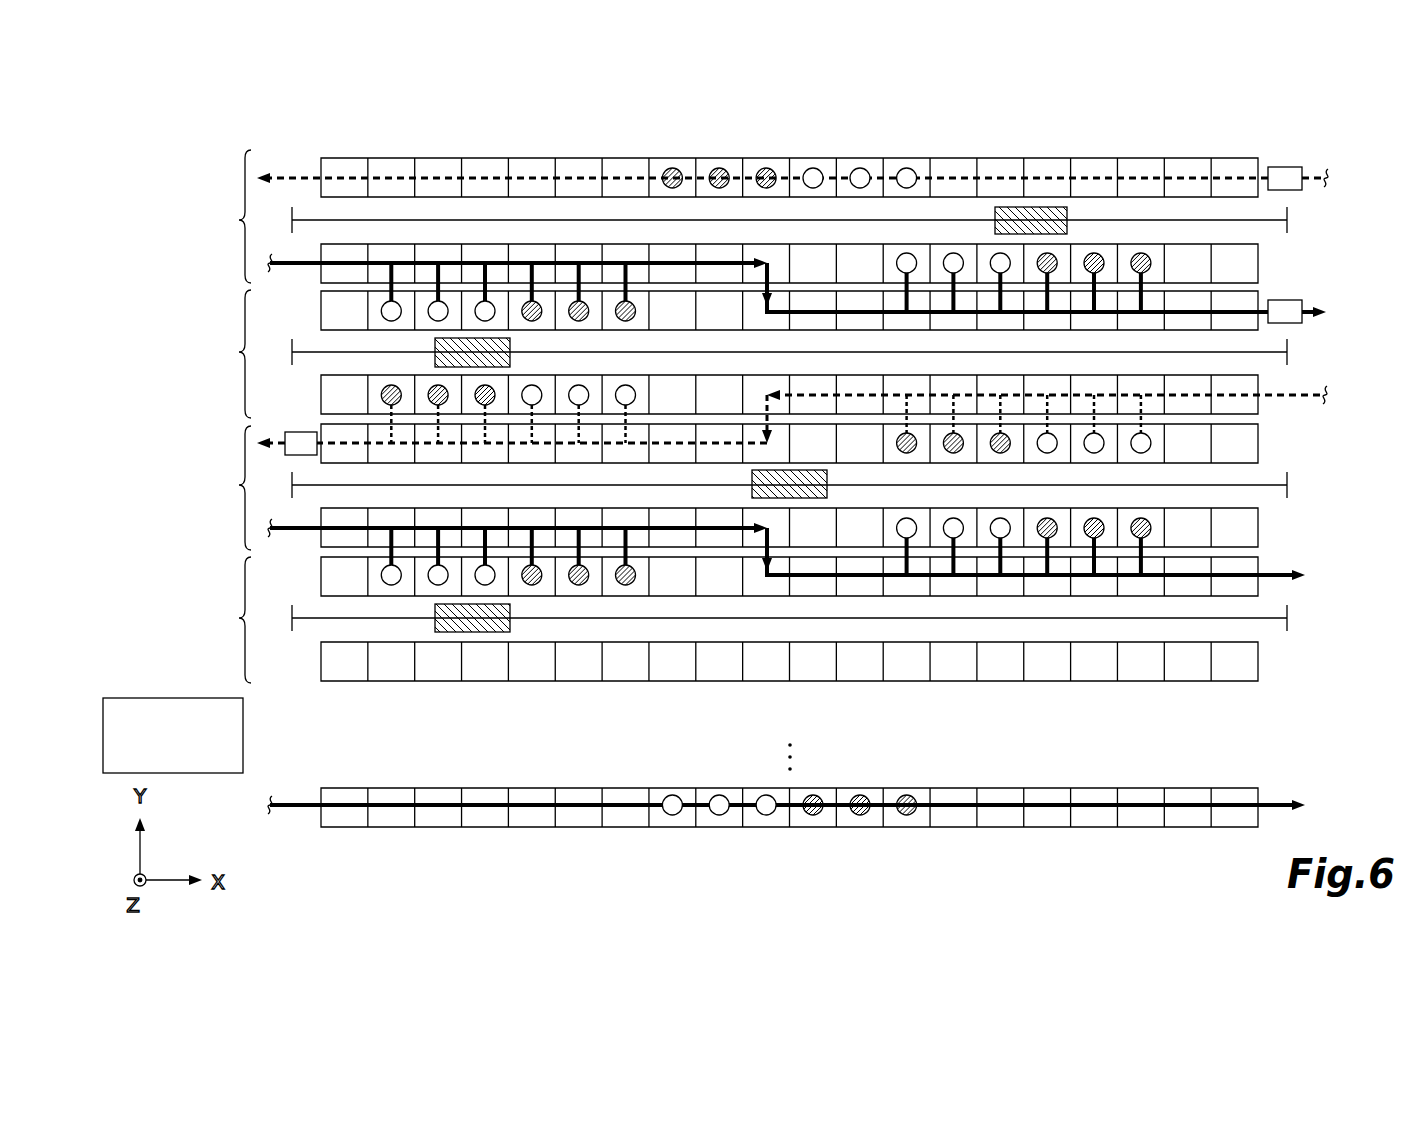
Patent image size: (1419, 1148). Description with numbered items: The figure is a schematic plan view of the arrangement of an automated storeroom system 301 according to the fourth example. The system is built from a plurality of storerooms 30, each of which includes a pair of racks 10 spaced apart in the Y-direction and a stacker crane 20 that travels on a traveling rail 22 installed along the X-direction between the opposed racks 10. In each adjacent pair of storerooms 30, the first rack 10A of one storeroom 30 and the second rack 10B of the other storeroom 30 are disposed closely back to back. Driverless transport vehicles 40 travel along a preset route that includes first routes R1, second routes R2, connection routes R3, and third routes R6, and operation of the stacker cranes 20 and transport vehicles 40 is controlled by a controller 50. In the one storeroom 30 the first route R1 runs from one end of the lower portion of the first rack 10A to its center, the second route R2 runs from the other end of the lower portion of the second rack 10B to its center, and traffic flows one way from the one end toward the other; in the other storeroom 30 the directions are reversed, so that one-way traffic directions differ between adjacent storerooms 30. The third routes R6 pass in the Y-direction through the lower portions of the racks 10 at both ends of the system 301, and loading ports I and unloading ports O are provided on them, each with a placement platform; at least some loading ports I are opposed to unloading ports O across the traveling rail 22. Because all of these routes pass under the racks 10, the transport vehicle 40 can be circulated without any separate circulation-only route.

The automated storeroom system 301 is at (206, 158).
The rack 10 is at (1242, 154).
The first rack 10A is at (1274, 257).
The second rack 10B is at (1274, 289).
The stacker crane 20 is at (1030, 206).
The traveling rail 22 is at (1188, 218).
The storeroom 30 is at (213, 416).
The transport vehicle 40 is at (1288, 166).
The controller 50 is at (118, 697).
The first route R1 is at (518, 258).
The second route R2 is at (976, 306).
The connection route R3 is at (771, 300).
The third route R6 is at (1088, 172).
The loading port I is at (435, 300).
The unloading port O is at (594, 297).